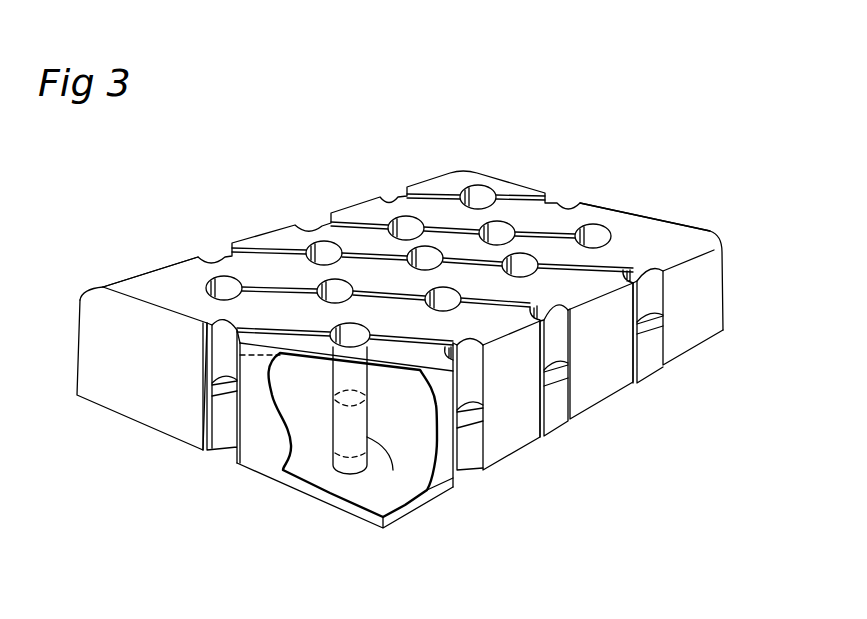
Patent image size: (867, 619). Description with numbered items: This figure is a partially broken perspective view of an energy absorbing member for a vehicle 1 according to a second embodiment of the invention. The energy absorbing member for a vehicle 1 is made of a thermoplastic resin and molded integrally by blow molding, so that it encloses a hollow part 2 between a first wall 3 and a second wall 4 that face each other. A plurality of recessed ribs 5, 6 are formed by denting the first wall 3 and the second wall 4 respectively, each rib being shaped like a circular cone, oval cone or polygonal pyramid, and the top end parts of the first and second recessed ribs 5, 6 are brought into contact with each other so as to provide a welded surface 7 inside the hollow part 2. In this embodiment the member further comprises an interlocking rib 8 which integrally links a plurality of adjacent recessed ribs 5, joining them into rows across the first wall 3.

The energy absorbing member for a vehicle 1 is at (337, 153).
The hollow part 2 is at (407, 425).
The first wall 3 is at (277, 267).
The second wall 4 is at (140, 423).
The recessed ribs 5 is at (323, 250).
The recessed ribs 6 is at (562, 403).
The welded surface 7 is at (545, 369).
The interlocking rib 8 is at (463, 257).